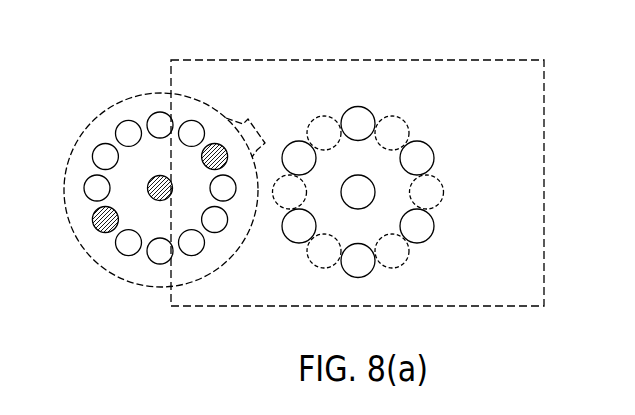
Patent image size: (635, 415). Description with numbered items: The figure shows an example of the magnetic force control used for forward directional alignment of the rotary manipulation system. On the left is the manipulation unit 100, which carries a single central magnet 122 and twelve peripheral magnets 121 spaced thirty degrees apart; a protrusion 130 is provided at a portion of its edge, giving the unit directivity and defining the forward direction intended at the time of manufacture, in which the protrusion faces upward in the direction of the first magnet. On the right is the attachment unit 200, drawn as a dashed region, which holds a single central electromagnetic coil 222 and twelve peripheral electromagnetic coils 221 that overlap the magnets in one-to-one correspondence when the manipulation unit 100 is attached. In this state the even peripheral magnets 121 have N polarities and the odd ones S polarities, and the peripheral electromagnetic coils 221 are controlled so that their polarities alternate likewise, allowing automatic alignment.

The manipulation unit 100 is at (125, 278).
The peripheral magnets 121 is at (122, 122).
The central magnet 122 is at (164, 200).
The protrusion 130 is at (247, 122).
The attachment unit 200 is at (544, 306).
The peripheral electromagnetic coils 221 is at (398, 116).
The central electromagnetic coil 222 is at (375, 190).